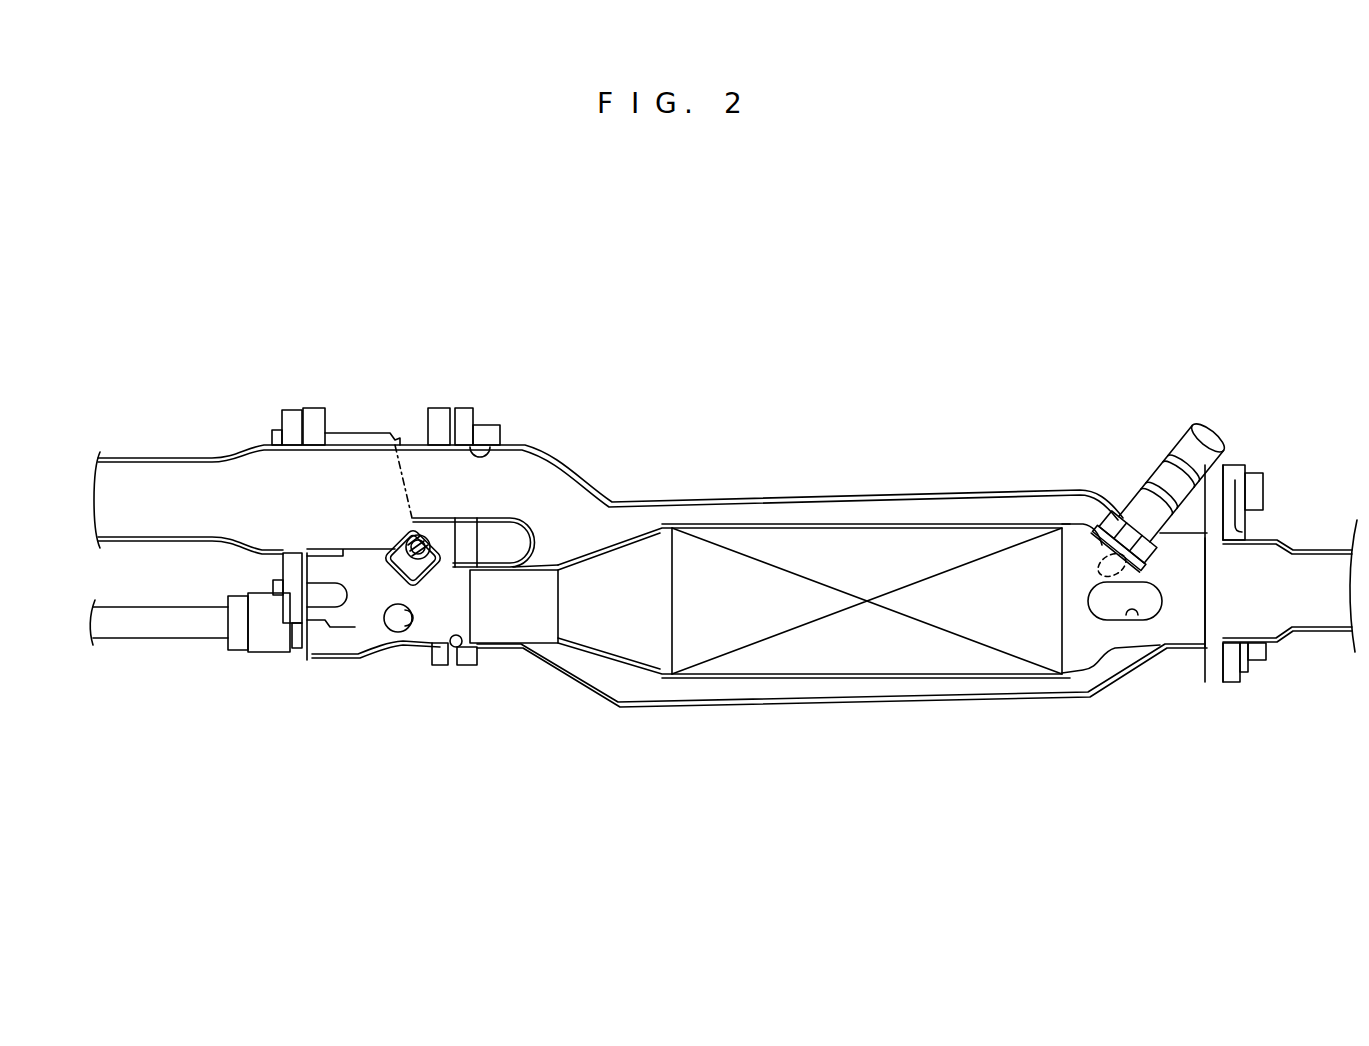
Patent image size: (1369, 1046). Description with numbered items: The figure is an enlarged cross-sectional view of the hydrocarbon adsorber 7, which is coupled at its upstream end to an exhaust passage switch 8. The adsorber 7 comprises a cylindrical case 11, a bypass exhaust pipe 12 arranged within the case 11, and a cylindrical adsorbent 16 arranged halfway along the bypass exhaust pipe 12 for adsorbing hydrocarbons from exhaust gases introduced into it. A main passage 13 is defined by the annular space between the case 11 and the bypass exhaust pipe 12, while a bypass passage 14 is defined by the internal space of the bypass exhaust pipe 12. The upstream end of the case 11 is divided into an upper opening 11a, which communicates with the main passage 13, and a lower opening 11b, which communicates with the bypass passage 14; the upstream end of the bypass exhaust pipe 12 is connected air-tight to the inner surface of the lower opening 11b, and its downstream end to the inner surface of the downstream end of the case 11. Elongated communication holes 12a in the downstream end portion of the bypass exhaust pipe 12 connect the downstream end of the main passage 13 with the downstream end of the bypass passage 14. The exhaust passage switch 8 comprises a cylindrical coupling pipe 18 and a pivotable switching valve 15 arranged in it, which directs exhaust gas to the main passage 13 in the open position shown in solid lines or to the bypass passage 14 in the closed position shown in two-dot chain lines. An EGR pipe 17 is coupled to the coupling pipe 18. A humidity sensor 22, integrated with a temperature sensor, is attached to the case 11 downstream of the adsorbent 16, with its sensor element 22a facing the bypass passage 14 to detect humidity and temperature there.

The hydrocarbon adsorber 7 is at (820, 328).
The exhaust passage switch 8 is at (397, 336).
The case 11 is at (897, 492).
The upper opening 11a is at (498, 450).
The lower opening 11b is at (452, 664).
The bypass exhaust pipe 12 is at (598, 658).
The communication holes 12a is at (1132, 617).
The main passage 13 is at (574, 523).
The bypass passage 14 is at (630, 613).
The switching valve 15 is at (412, 522).
The adsorbent 16 is at (893, 665).
The EGR pipe 17 is at (160, 645).
The coupling pipe 18 is at (375, 435).
The humidity sensor 22 is at (1182, 428).
The sensor element 22a is at (1100, 553).